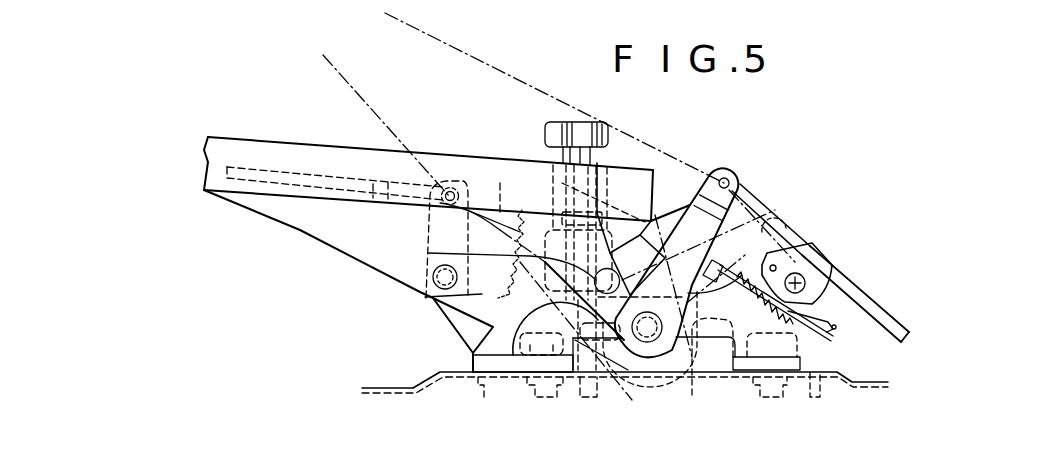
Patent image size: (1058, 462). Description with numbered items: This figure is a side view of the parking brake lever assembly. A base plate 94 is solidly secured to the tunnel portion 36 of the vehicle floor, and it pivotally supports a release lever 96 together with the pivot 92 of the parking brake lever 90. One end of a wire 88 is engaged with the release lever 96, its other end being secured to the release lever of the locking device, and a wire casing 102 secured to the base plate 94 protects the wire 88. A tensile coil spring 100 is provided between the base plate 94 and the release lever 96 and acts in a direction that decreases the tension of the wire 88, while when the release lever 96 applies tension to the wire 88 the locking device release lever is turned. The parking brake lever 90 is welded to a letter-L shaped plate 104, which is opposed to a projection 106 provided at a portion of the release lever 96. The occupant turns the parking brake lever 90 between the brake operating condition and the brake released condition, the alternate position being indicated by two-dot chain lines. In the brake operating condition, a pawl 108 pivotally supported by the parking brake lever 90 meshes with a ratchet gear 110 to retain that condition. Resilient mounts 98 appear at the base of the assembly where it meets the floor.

The tunnel portion 36 is at (382, 388).
The wire 88 is at (745, 195).
The parking brake lever 90 is at (298, 150).
The pivot 92 is at (634, 366).
The base plate 94 is at (745, 325).
The release lever 96 is at (706, 197).
The resilient mounts 98 is at (462, 338).
The tensile coil spring 100 is at (812, 322).
The wire casing 102 is at (865, 285).
The letter 'L' shaped plate 104 is at (637, 232).
The projection 106 is at (428, 253).
The pawl 108 is at (448, 313).
The ratchet gear 110 is at (497, 218).